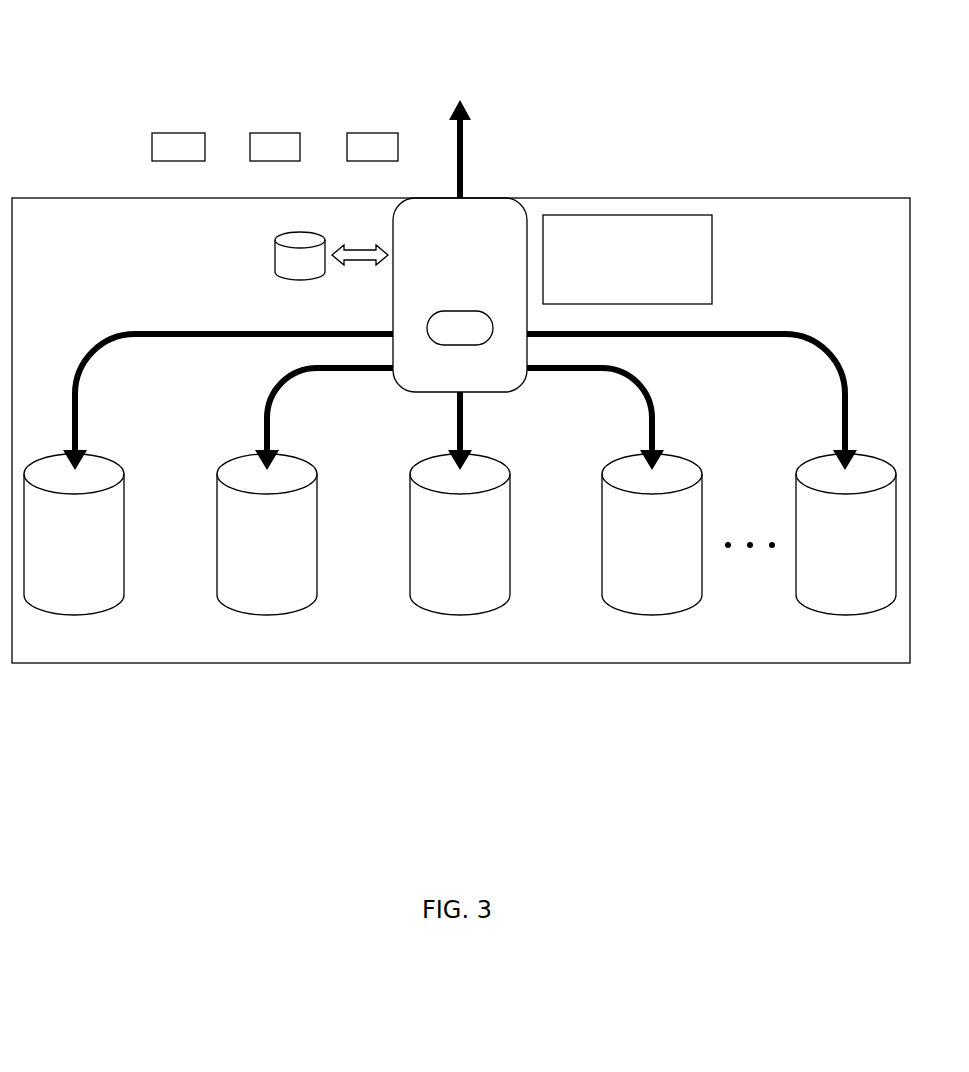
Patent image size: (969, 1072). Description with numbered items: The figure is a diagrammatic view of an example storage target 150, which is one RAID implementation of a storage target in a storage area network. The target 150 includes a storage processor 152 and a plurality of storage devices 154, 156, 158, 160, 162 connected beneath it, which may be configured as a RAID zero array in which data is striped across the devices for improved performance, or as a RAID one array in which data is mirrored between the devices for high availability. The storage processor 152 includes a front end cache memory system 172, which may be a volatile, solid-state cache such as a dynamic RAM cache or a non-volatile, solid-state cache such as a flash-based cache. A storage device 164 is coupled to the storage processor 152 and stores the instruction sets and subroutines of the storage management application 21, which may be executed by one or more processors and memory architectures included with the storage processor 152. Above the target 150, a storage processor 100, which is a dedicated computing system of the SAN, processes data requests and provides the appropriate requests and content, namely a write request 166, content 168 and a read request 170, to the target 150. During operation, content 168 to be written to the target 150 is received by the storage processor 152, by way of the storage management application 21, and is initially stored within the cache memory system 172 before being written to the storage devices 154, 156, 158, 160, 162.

The storage management application 21 is at (712, 272).
The storage processor 100 is at (460, 110).
The storage target 150 is at (461, 430).
The storage processor 152 is at (460, 295).
The storage device 154 is at (208, 474).
The storage device 156 is at (305, 491).
The storage device 158 is at (460, 503).
The storage device 160 is at (614, 491).
The storage device 162 is at (711, 474).
The storage device 164 is at (300, 256).
The write request 166 is at (152, 150).
The content 168 is at (250, 150).
The read request 170 is at (347, 150).
The cache memory system 172 is at (460, 328).